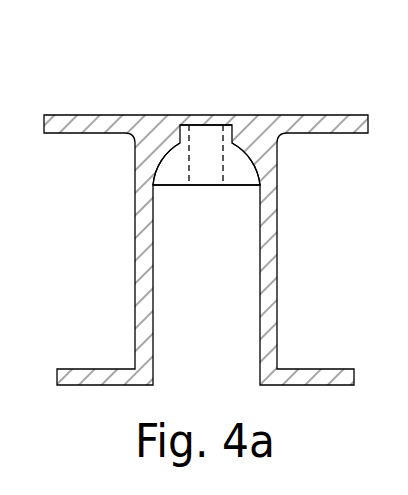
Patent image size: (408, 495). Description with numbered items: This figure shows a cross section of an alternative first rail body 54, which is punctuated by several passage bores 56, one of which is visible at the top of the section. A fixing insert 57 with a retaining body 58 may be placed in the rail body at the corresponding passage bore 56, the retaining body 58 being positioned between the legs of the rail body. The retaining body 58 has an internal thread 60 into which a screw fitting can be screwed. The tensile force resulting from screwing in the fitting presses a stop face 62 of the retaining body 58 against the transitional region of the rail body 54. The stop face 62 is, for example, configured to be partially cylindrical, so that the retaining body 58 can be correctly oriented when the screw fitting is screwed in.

The first rail body 54 is at (127, 102).
The passage bore 56 is at (231, 124).
The fixing insert 57 is at (217, 96).
The retaining body 58 is at (232, 179).
The internal thread 60 is at (202, 179).
The stop face 62 is at (174, 141).